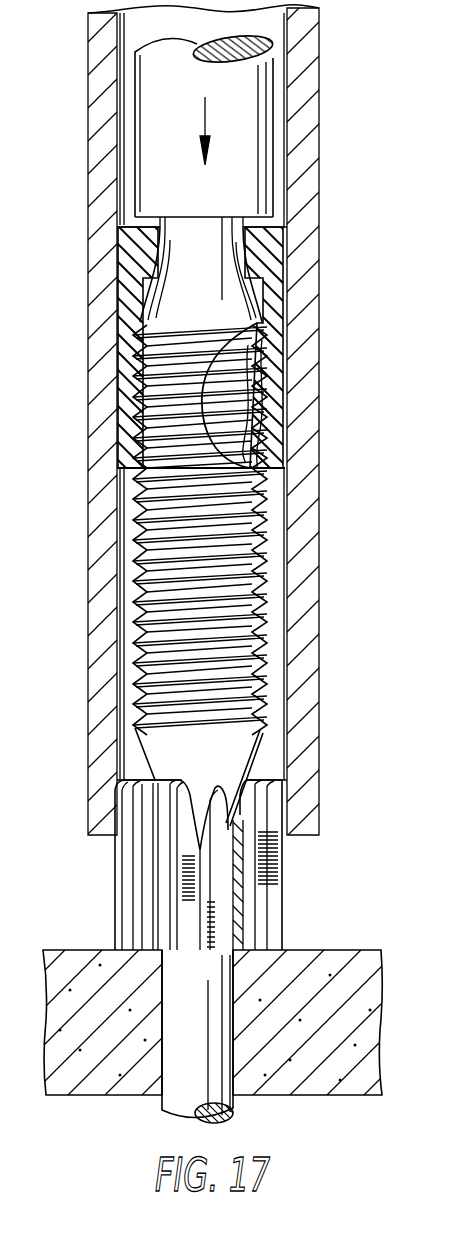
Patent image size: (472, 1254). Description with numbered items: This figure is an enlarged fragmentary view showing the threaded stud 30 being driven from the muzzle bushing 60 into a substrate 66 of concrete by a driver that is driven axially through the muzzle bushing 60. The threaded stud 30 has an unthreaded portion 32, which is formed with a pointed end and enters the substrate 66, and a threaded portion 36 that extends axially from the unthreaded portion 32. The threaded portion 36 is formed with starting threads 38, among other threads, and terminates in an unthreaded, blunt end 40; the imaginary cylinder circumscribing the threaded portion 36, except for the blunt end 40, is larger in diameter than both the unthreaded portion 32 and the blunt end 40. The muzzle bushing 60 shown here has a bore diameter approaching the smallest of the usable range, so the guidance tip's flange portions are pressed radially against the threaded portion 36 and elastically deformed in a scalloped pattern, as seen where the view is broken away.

The threaded stud 30 is at (247, 575).
The unthreaded portion 32 is at (217, 996).
The threaded portion 36 is at (265, 604).
The starting threads 38 is at (160, 385).
The blunt end 40 is at (176, 242).
The muzzle bushing 60 is at (303, 714).
The substrate 66 is at (341, 1032).